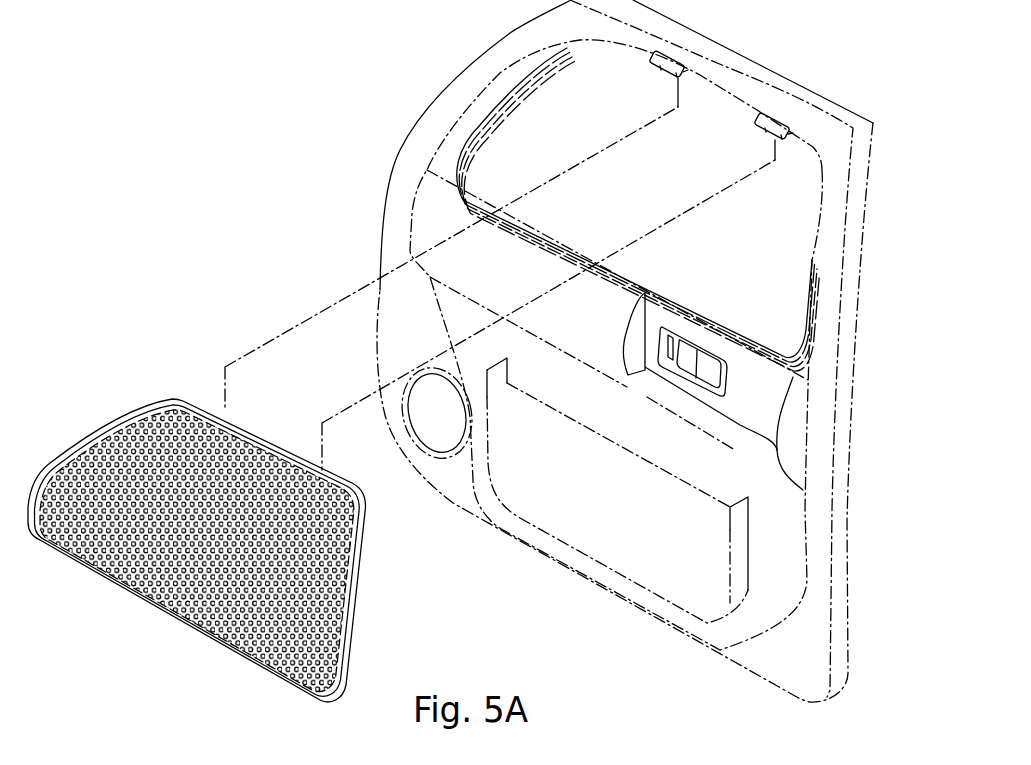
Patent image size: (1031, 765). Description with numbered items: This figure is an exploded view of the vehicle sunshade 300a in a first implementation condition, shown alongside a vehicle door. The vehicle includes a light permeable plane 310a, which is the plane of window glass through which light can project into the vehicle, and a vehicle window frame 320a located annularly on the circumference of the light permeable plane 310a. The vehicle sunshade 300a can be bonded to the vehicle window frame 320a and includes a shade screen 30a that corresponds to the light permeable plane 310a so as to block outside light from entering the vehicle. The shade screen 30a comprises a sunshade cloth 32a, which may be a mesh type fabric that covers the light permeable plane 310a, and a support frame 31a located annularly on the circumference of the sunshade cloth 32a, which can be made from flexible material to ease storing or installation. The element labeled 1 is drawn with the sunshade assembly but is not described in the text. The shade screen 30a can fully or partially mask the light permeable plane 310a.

The vehicle sunshade 300a is at (310, 90).
The fastening clip 1 is at (653, 58).
The shade screen 30a is at (231, 415).
The support frame 31a is at (168, 407).
The sunshade cloth 32a is at (315, 592).
The light permeable plane 310a is at (793, 240).
The vehicle window frame 320a is at (872, 167).